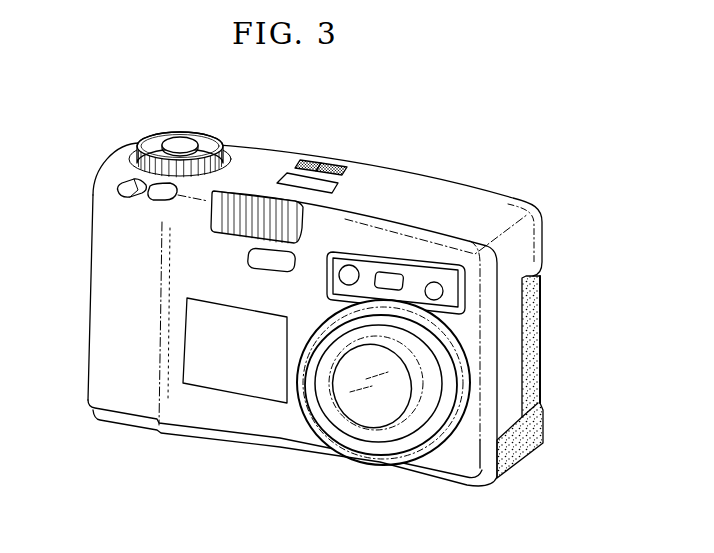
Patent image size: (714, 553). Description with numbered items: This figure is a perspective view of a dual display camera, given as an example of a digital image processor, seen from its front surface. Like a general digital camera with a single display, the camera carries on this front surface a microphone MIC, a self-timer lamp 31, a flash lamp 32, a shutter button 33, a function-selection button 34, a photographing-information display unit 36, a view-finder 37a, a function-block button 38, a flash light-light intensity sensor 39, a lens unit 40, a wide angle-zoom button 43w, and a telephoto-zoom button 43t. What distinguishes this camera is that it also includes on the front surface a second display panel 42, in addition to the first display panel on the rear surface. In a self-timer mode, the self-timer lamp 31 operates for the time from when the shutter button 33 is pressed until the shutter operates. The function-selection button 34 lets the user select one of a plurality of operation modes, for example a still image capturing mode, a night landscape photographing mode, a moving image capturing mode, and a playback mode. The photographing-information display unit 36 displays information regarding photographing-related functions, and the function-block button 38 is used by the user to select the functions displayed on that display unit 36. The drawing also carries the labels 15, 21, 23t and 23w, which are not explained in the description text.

The self-timer lamp 15 is at (305, 162).
The grip 21 is at (535, 427).
The top surface of camera body 23t is at (455, 181).
The upper wall of camera body 23w is at (408, 197).
The viewfinder window 31 is at (350, 266).
The zoom switch 32 is at (247, 210).
The shutter release button 33 is at (179, 138).
The mode dial 34 is at (148, 145).
The flash window 36 is at (312, 186).
The front panel 37a is at (457, 307).
The speaker 38 is at (338, 168).
The light sensor 39 is at (443, 290).
The lens 40 is at (397, 388).
The flash 42 is at (245, 380).
The telephoto zoom button 43t is at (150, 191).
The wide-angle zoom button 43w is at (127, 183).
The microphone MIC is at (250, 251).